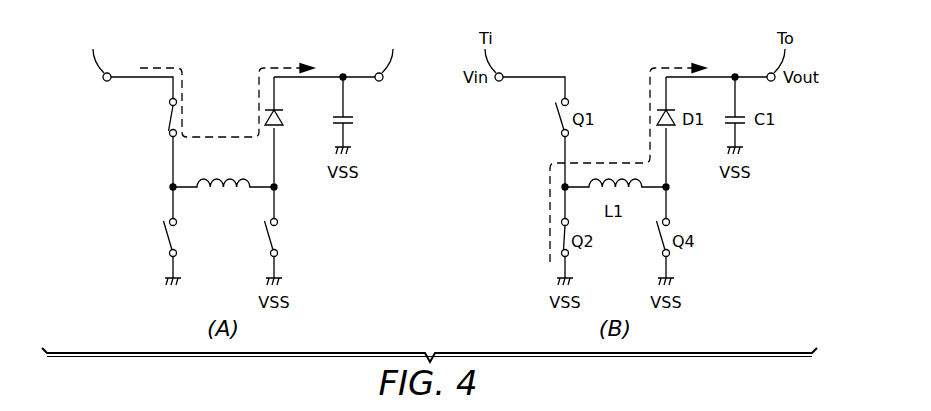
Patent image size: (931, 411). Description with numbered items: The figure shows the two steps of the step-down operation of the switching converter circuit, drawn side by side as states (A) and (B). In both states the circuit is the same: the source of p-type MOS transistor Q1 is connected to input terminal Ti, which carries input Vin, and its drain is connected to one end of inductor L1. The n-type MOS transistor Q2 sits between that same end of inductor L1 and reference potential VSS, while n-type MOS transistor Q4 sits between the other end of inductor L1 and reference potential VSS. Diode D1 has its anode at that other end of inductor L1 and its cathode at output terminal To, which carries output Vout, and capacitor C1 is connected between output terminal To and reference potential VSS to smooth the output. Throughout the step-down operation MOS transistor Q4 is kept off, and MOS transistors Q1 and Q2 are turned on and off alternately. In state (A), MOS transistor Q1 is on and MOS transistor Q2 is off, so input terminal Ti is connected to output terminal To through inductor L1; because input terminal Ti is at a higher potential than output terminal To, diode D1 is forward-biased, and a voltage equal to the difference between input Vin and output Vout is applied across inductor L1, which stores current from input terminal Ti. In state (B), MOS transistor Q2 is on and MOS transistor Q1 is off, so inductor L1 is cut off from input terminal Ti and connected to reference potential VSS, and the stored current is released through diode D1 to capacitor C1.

The input Vin is at (91, 77).
The output Vout is at (401, 77).
The input terminal Ti is at (95, 51).
The output terminal To is at (392, 51).
The p-type MOS transistor Q1 is at (158, 118).
The n-type MOS transistor Q2 is at (183, 238).
The n-type MOS transistor Q4 is at (284, 238).
The diode D1 is at (289, 103).
The inductor L1 is at (223, 174).
The capacitor C1 is at (358, 113).
The reference potential VSS is at (172, 285).